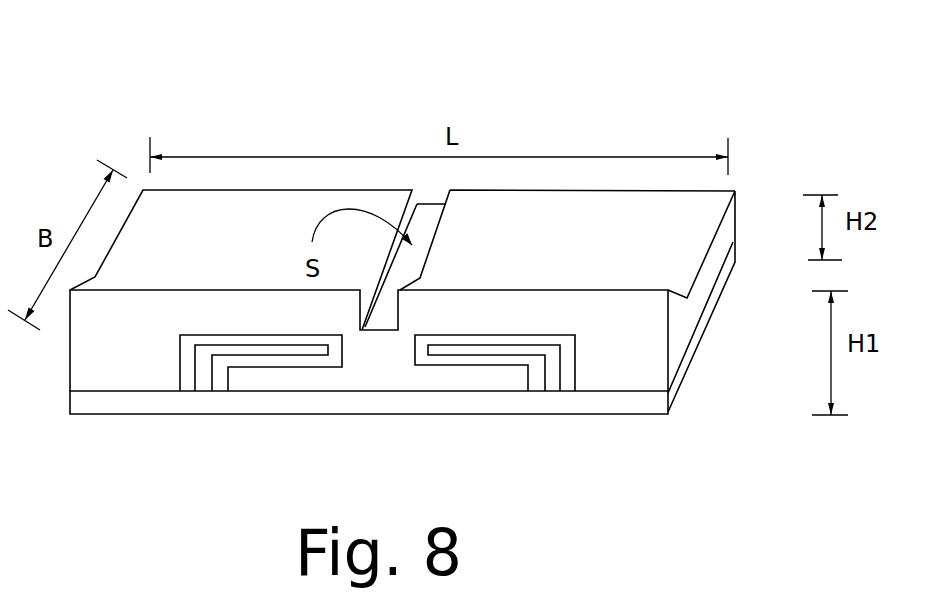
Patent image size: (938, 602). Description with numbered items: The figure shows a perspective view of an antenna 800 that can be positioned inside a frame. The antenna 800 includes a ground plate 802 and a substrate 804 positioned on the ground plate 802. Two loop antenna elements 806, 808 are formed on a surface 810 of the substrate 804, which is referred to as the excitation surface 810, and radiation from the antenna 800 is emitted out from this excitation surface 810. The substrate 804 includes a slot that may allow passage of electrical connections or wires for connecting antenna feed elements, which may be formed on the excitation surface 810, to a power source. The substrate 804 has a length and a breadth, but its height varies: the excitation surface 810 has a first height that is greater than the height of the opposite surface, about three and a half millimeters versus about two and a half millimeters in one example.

The antenna 800 is at (380, 100).
The ground plate 802 is at (643, 405).
The substrate 804 is at (678, 317).
The loop antenna element 806 is at (577, 352).
The loop antenna element 808 is at (265, 365).
The excitation surface 810 is at (128, 346).